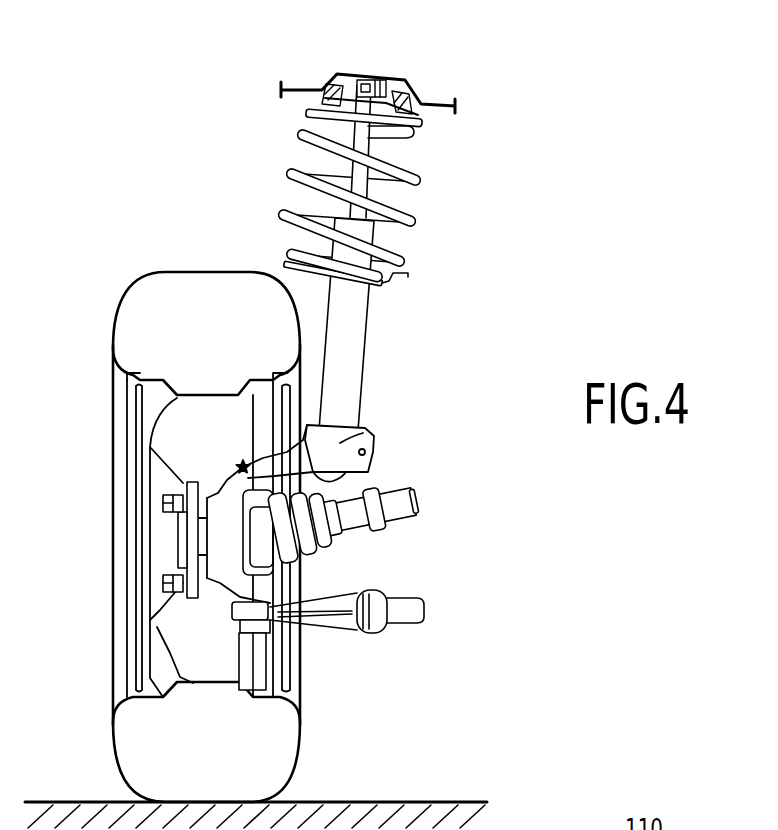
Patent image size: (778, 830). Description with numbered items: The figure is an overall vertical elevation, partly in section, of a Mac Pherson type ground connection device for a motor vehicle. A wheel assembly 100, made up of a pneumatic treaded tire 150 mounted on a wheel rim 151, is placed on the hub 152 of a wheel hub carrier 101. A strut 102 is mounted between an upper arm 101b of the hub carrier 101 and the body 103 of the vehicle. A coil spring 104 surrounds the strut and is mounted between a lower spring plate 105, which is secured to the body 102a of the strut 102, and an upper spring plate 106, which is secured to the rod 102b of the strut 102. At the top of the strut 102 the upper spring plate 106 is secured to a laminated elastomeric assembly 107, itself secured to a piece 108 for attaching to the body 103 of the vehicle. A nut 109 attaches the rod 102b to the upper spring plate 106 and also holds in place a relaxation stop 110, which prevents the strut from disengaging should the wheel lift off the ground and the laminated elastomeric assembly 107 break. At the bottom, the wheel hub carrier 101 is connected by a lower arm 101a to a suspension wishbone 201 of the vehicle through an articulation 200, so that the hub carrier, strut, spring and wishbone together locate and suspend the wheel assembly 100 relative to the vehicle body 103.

The wheel assembly 100 is at (112, 292).
The wheel hub carrier 101 is at (238, 463).
The lower arm 101a is at (307, 583).
The upper arm 101b is at (357, 438).
The strut 102 is at (363, 235).
The body of the strut 102a is at (348, 353).
The rod of the strut 102b is at (295, 180).
The body of the vehicle 103 is at (394, 74).
The coil spring 104 is at (362, 277).
The lower spring plate 105 is at (402, 278).
The upper spring plate 106 is at (420, 131).
The laminated elastomeric assembly 107 is at (410, 113).
The attaching piece 108 is at (312, 100).
The nut 109 is at (375, 100).
The relaxation stop 110 is at (351, 71).
The pneumatic treaded tire 150 is at (132, 326).
The wheel rim 151 is at (170, 466).
The hub 152 is at (185, 537).
The articulation 200 is at (262, 615).
The suspension wishbone 201 is at (350, 628).